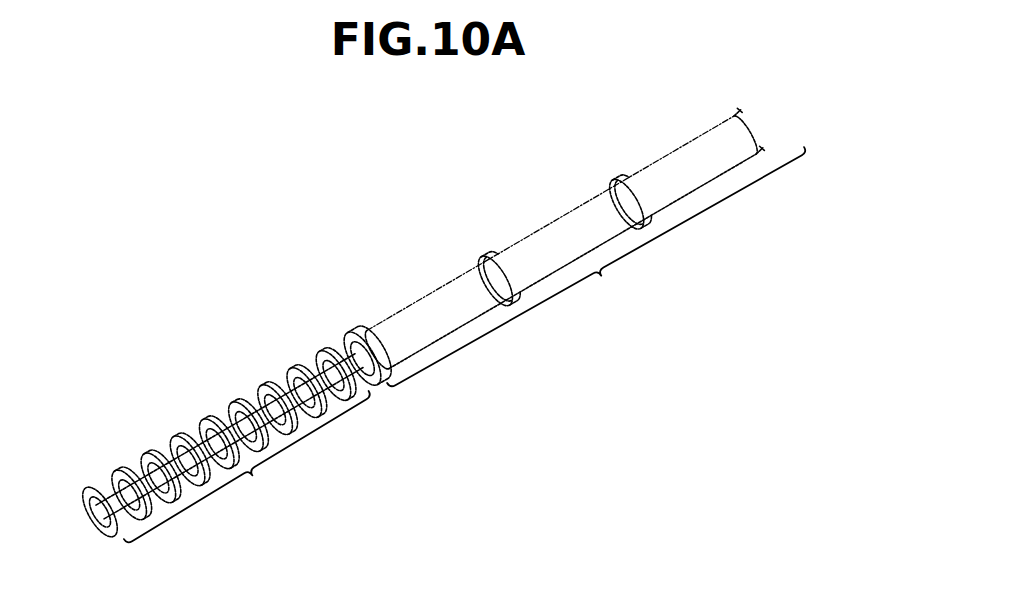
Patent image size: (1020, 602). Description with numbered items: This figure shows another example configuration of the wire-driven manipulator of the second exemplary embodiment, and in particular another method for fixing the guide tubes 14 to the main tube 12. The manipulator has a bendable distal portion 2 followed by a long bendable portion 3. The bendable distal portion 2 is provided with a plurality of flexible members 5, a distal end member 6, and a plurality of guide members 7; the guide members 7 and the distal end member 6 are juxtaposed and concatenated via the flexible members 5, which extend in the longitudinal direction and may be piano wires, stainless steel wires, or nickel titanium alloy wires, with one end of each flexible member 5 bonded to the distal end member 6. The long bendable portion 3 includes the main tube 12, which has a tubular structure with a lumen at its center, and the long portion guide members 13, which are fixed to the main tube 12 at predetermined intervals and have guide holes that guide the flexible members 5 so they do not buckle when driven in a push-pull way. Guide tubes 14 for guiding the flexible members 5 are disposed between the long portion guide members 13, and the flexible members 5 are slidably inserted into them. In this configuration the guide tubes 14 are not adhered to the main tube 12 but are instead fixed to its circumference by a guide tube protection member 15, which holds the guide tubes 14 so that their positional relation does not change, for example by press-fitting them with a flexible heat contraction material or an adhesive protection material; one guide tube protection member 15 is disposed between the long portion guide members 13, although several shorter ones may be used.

The bendable distal portion 2 is at (249, 469).
The long bendable portion 3 is at (583, 242).
The flexible members 5 is at (237, 412).
The distal end member 6 is at (92, 486).
The guide members 7 is at (150, 457).
The main tube 12 is at (488, 265).
The long portion guide members 13 is at (356, 343).
The guide tubes 14 is at (607, 190).
The guide tube protection member 15 is at (428, 312).